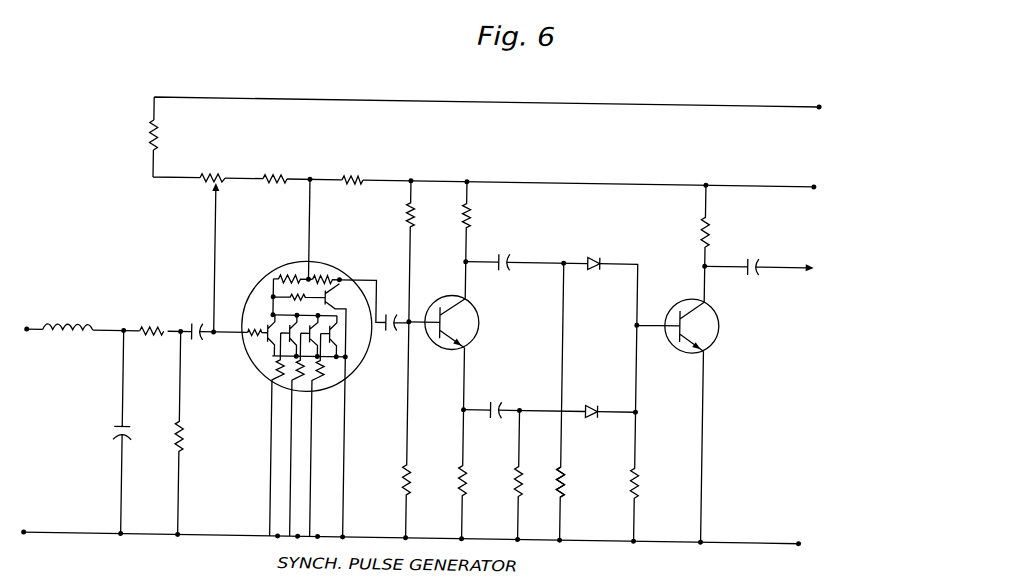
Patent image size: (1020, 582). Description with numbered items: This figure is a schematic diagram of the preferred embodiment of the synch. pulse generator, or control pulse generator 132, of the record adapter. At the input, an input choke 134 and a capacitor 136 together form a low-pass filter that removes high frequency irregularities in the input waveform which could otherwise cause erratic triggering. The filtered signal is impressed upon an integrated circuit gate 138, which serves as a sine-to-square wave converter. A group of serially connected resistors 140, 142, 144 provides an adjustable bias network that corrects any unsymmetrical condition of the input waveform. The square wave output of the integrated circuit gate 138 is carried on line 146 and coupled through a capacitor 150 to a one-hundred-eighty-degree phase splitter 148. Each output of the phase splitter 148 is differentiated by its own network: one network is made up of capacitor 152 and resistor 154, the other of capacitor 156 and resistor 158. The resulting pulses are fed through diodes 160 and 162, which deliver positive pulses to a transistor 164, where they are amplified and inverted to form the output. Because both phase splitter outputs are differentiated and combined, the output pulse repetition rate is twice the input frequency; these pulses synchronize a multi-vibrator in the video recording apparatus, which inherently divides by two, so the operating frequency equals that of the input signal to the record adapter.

The control pulse generator 132 is at (212, 72).
The input choke 134 is at (77, 335).
The capacitor 136 is at (118, 424).
The integrated circuit gate 138 is at (264, 257).
The resistor 140 is at (150, 132).
The resistor 142 is at (207, 172).
The resistor 144 is at (276, 172).
The line 146 is at (358, 276).
The 180° phase splitter 148 is at (512, 328).
The capacitor 150 is at (384, 328).
The capacitor 152 is at (514, 248).
The resistor 154 is at (567, 462).
The capacitor 156 is at (511, 393).
The resistor 158 is at (522, 462).
The diode 160 is at (599, 252).
The diode 162 is at (603, 394).
The transistor 164 is at (722, 319).